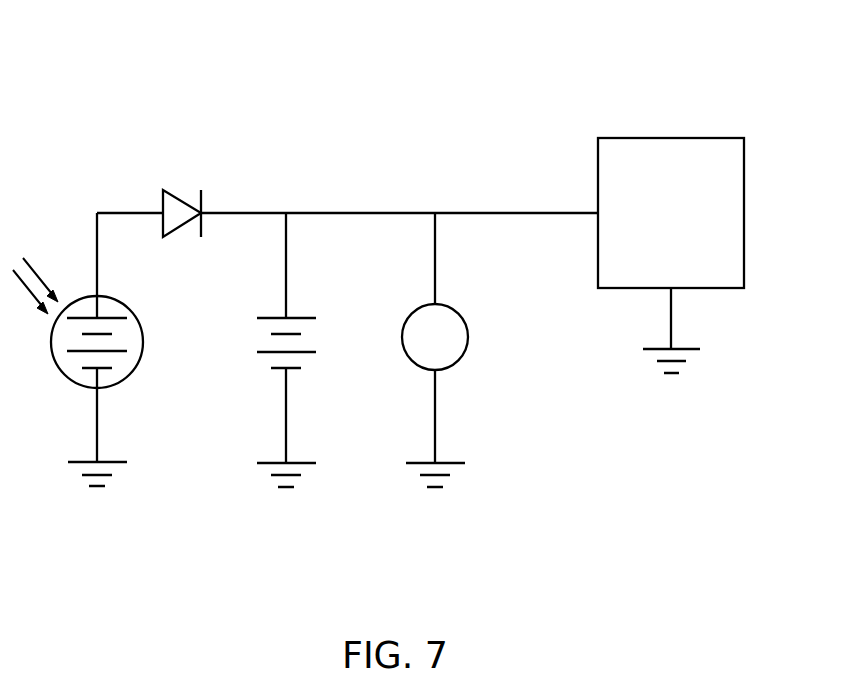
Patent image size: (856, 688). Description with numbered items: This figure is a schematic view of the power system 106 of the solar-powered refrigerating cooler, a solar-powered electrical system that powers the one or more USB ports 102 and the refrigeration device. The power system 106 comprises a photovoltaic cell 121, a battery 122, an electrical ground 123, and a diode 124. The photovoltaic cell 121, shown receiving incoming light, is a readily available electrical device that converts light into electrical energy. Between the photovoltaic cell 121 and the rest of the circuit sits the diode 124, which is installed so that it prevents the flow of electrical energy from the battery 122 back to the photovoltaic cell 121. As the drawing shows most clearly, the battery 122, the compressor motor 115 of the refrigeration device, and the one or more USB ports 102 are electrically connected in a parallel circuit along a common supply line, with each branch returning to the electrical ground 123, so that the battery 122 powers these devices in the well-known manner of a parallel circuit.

The power system 106 is at (90, 108).
The diode 124 is at (166, 192).
The photovoltaic cell 121 is at (124, 297).
The battery 122 is at (315, 338).
The compressor motor 115 is at (469, 329).
The electrical ground 123 is at (267, 480).
The one or more USB ports 102 is at (744, 235).